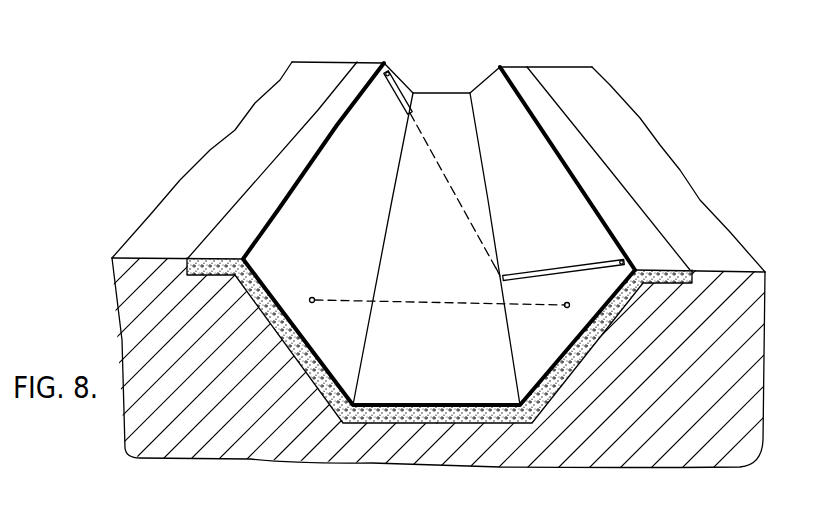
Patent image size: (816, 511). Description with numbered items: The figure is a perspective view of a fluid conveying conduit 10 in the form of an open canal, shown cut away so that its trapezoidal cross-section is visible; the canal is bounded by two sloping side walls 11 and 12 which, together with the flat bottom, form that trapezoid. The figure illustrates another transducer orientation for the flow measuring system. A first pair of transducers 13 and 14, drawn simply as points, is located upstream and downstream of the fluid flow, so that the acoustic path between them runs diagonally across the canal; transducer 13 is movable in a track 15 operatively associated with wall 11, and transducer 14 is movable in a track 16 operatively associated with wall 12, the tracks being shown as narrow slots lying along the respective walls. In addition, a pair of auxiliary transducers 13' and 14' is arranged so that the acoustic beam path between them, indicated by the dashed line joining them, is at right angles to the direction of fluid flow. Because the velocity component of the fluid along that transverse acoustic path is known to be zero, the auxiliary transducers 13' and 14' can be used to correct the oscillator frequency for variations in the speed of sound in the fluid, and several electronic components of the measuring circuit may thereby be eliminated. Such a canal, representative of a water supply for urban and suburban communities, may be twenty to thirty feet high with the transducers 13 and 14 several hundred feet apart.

The fluid conveying conduit 10 is at (467, 75).
The sloping side wall 11 is at (315, 338).
The sloping side wall 12 is at (576, 327).
The transducer 13 is at (439, 190).
The auxiliary transducer 13' is at (433, 290).
The transducer 14 is at (512, 261).
The auxiliary transducer 14' is at (573, 294).
The track 15 is at (392, 78).
The track 16 is at (565, 264).